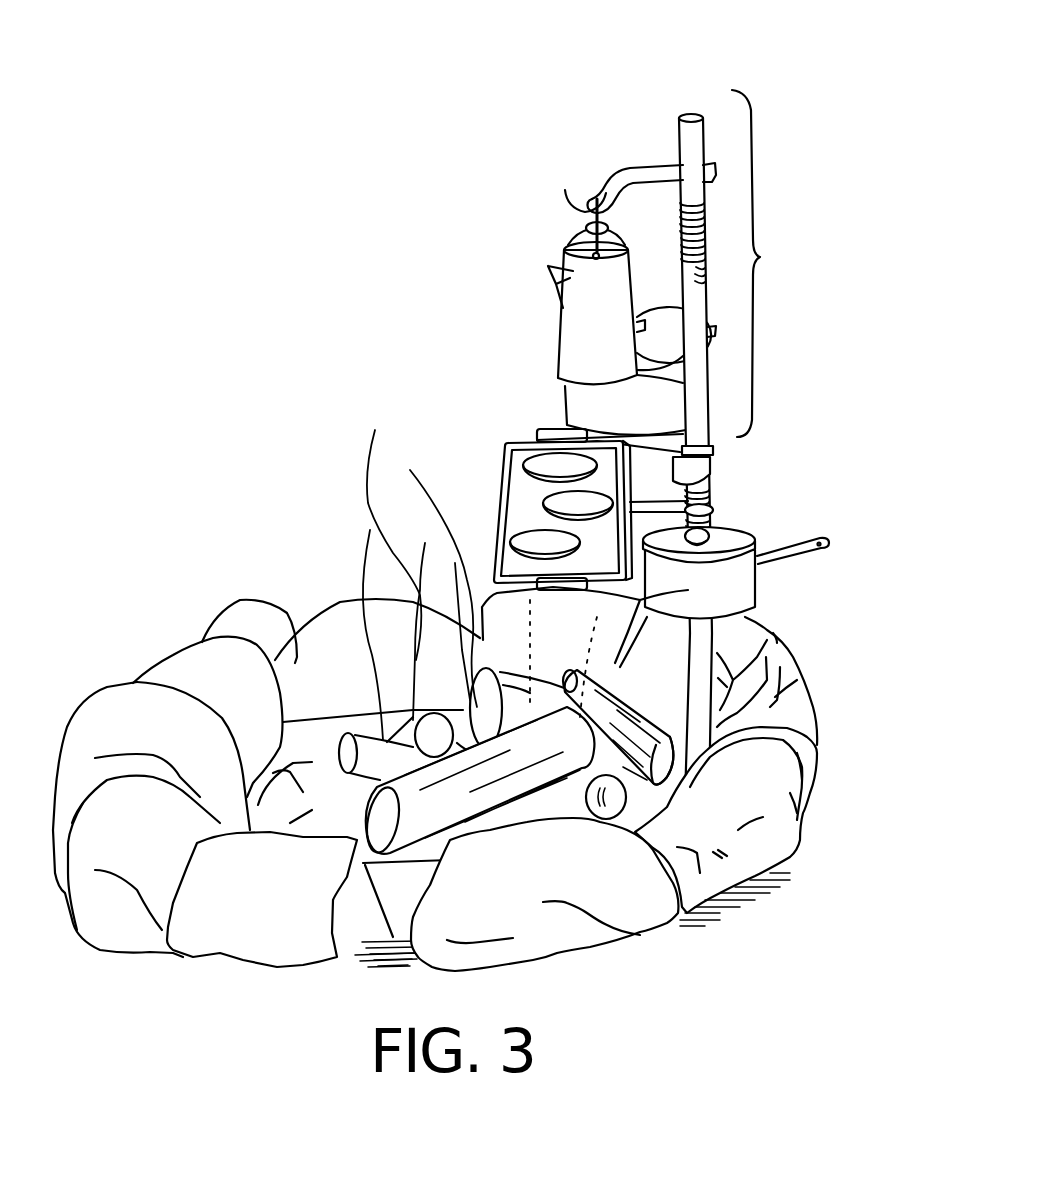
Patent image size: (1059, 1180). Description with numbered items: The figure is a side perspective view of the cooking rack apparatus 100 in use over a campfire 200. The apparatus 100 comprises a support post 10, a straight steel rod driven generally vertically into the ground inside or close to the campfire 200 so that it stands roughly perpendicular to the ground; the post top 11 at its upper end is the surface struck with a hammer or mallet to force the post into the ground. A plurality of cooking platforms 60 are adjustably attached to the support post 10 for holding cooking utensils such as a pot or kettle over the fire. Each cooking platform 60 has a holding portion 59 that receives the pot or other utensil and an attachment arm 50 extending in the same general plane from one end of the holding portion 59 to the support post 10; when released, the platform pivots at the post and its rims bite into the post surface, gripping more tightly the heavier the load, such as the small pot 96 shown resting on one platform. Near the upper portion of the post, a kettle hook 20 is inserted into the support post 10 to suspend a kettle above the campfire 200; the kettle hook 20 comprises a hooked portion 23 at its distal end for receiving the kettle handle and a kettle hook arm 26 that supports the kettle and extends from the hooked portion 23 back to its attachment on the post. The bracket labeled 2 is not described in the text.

The cooking support assembly 2 is at (768, 258).
The support post 10 is at (667, 403).
The post top 11 is at (691, 114).
The kettle hook 20 is at (559, 207).
The hooked portion 23 is at (595, 183).
The kettle hook arm 26 is at (608, 143).
The attachment arm 50 is at (698, 510).
The holding portion 59 is at (520, 503).
The cooking platform 60 is at (633, 506).
The small pot 96 is at (740, 588).
The cooking rack apparatus 100 is at (708, 403).
The campfire 200 is at (833, 813).